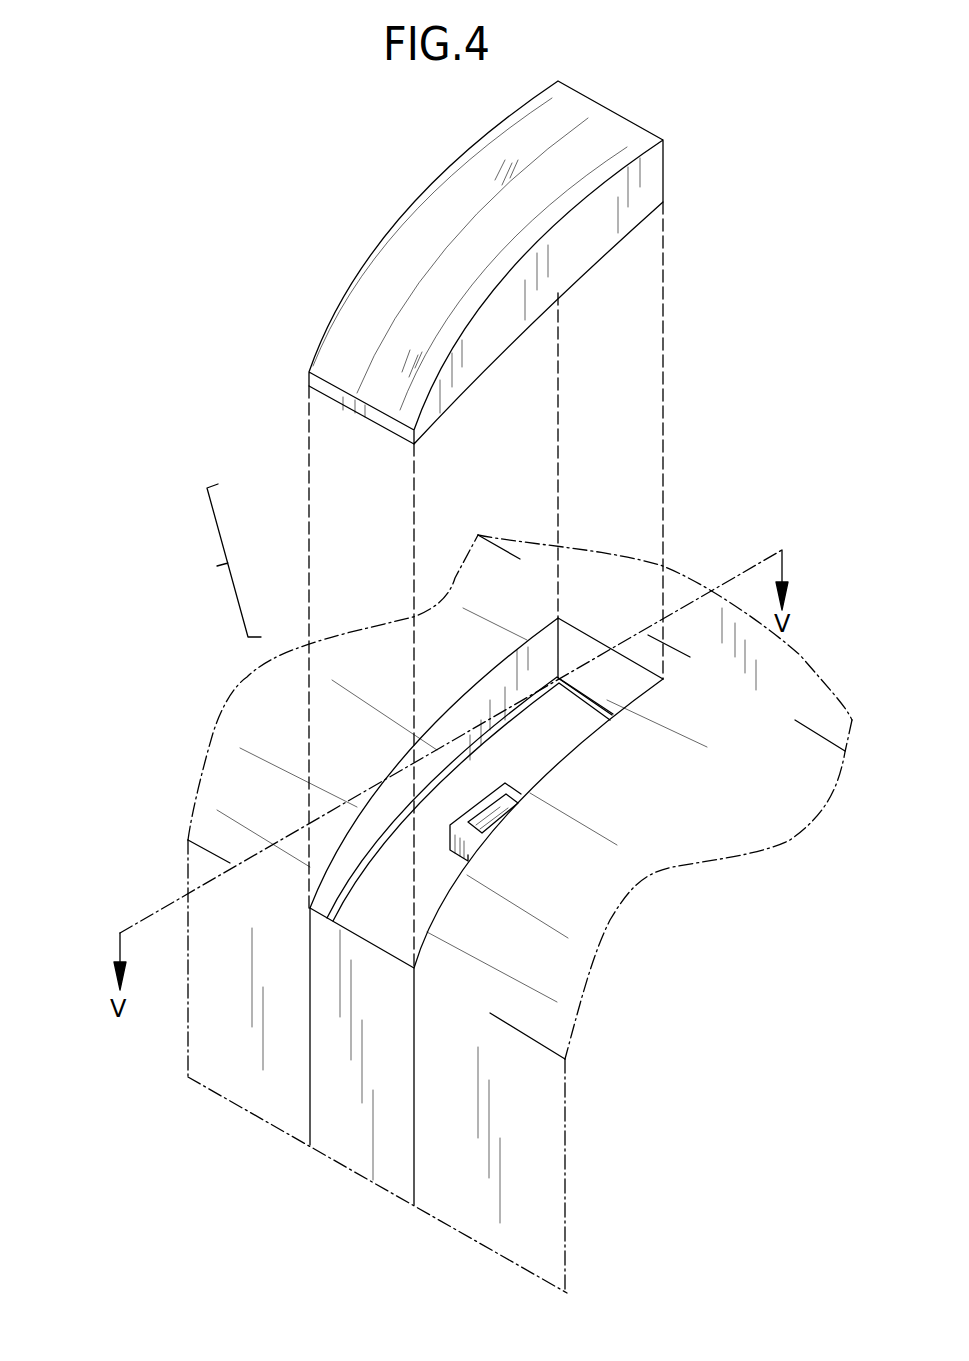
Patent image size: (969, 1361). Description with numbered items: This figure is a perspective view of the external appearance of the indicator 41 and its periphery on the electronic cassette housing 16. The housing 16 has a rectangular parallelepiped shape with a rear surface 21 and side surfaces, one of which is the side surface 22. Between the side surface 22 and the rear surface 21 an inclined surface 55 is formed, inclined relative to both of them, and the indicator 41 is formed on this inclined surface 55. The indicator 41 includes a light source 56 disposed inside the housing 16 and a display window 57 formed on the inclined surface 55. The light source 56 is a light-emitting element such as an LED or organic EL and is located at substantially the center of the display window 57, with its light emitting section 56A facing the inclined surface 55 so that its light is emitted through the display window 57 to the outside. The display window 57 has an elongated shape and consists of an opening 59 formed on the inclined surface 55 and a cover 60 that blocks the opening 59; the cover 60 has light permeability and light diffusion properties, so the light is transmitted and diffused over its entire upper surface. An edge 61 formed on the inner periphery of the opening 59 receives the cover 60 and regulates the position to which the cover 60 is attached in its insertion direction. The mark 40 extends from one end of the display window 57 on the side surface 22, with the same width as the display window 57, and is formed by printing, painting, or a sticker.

The housing 16 is at (259, 1092).
The rear surface 21 is at (602, 568).
The side surface 22 is at (537, 1230).
The mark 40 is at (401, 1180).
The indicator 41 is at (590, 781).
The inclined surface 55 is at (225, 793).
The light source 56 is at (515, 828).
The light emitting section 56A is at (512, 800).
The display window 57 is at (422, 585).
The opening 59 is at (452, 706).
The cover 60 is at (307, 378).
The edge 61 is at (353, 887).